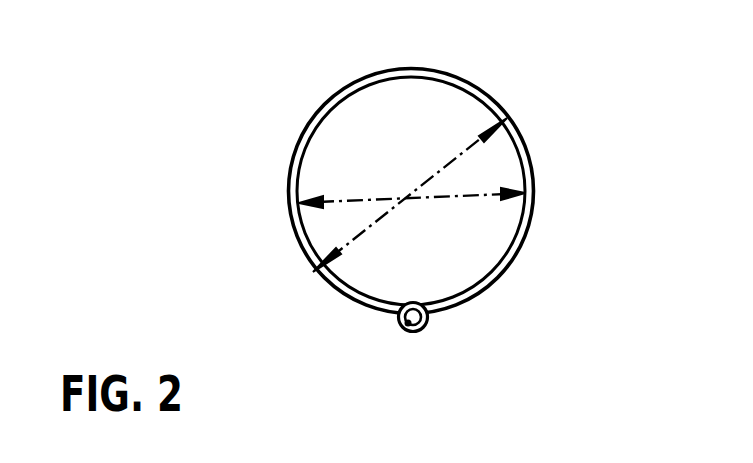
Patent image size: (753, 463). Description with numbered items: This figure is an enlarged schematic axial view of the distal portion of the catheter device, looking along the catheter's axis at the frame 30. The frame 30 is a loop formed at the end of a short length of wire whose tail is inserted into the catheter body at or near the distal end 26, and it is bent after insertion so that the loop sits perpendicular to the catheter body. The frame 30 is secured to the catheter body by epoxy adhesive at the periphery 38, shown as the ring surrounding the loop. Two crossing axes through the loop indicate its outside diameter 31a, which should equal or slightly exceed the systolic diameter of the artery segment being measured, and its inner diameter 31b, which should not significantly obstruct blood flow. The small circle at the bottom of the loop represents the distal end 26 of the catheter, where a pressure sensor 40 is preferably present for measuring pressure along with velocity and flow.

The frame 30 is at (484, 99).
The periphery 38 is at (494, 289).
The outside diameter 31a is at (449, 161).
The inner diameter 31b is at (417, 195).
The distal end 26 is at (427, 328).
The pressure sensor 40 is at (408, 324).